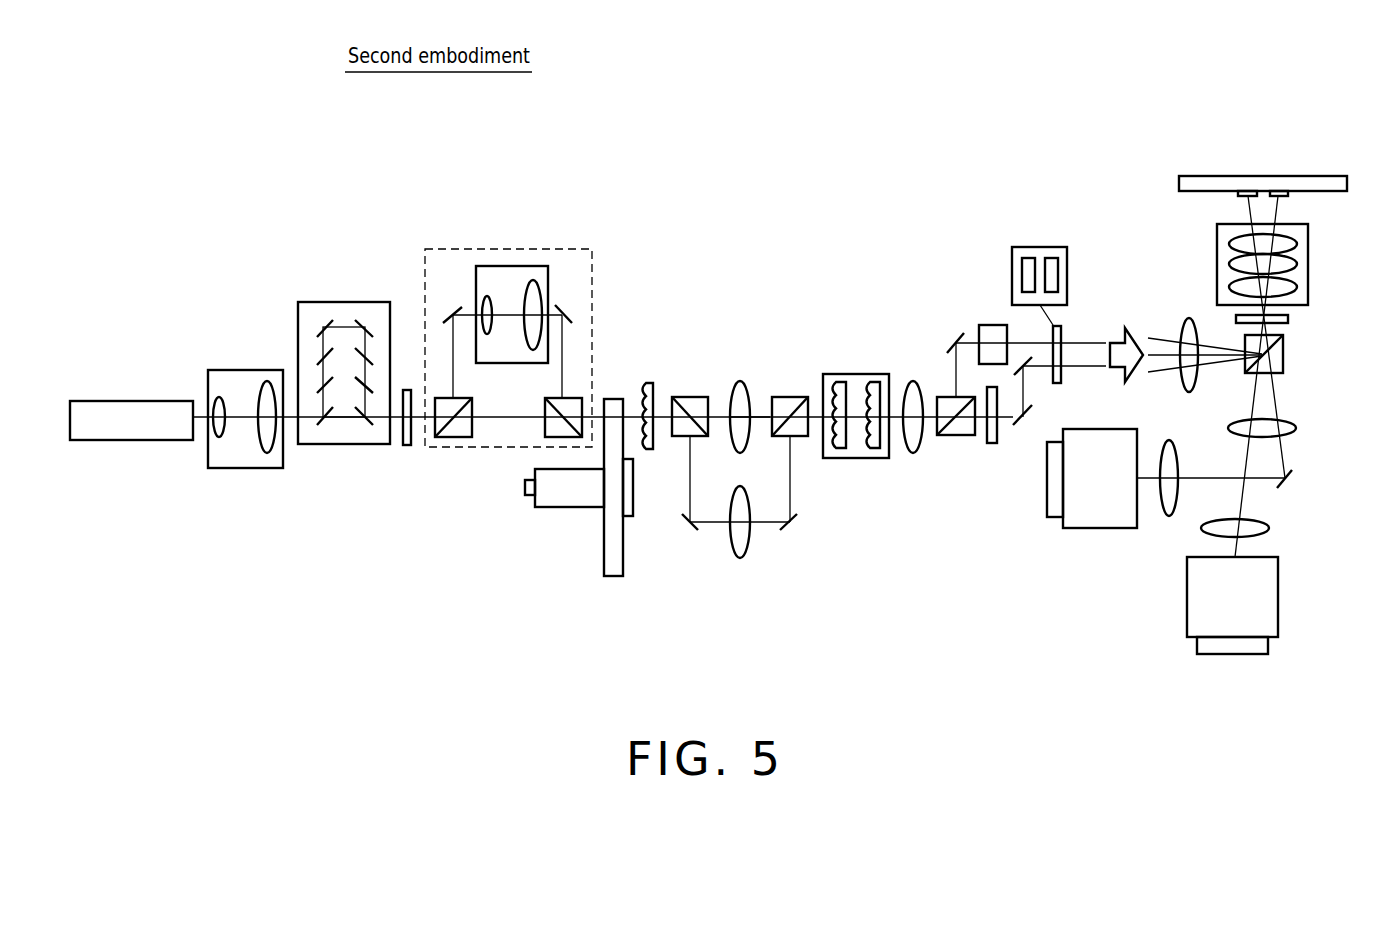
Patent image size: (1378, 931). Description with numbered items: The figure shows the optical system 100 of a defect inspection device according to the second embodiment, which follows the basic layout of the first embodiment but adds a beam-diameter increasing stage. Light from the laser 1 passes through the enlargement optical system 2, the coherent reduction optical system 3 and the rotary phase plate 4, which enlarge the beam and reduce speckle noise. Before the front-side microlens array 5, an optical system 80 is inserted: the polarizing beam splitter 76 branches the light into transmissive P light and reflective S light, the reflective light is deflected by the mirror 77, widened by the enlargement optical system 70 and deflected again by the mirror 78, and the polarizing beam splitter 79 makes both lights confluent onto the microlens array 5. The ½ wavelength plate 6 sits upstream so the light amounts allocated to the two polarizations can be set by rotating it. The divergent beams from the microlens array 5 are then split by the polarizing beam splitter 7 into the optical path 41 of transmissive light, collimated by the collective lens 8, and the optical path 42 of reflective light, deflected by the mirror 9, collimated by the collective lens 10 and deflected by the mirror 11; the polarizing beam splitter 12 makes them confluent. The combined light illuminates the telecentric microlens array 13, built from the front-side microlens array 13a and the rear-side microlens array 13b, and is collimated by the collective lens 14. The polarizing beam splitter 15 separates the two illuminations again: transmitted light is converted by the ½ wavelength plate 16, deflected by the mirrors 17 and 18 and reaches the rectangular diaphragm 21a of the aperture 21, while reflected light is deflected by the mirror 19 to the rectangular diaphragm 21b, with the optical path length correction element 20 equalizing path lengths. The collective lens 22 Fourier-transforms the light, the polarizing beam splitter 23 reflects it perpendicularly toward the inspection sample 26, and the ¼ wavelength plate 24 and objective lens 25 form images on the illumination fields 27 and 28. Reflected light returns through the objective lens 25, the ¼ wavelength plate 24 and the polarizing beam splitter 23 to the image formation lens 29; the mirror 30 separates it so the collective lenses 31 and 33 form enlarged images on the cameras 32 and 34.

The optical system 100 is at (839, 240).
The laser 1 is at (165, 400).
The enlargement optical system 2 is at (246, 369).
The coherent reduction optical system 3 is at (333, 301).
The rotary phase plate 4 is at (560, 508).
The microlens array 5 is at (648, 382).
The ½ wavelength plate 6 is at (407, 389).
The polarizing beam splitter 7 is at (690, 396).
The collective lens 8 is at (740, 380).
The mirror 9 is at (690, 532).
The collective lens 10 is at (740, 560).
The mirror 11 is at (790, 532).
The polarizing beam splitter 12 is at (795, 396).
The microlens array 13 is at (855, 373).
The front-side microlens array 13a is at (838, 450).
The rear-side microlens array 13b is at (875, 450).
The collective lens 14 is at (913, 380).
The polarizing beam splitter 15 is at (955, 437).
The ½ wavelength plate 16 is at (991, 445).
The mirror 17 is at (1023, 428).
The mirror 18 is at (1015, 368).
The mirror 19 is at (947, 335).
The optical path length correction element 20 is at (985, 324).
The aperture 21 is at (1040, 246).
The rectangular diaphragm 21a is at (1028, 257).
The rectangular diaphragm 21b is at (1052, 257).
The collective lens 22 is at (1180, 325).
The polarizing beam splitter 23 is at (1285, 357).
The ¼ wavelength plate 24 is at (1290, 320).
The objective lens 25 is at (1217, 267).
The inspection sample 26 is at (1290, 176).
The illumination field 27 is at (1240, 197).
The illumination field 28 is at (1288, 197).
The image formation lens 29 is at (1296, 428).
The mirror 30 is at (1292, 483).
The collective lens 31 is at (1168, 518).
The camera 32 is at (1098, 529).
The collective lens 33 is at (1270, 528).
The camera 34 is at (1280, 595).
The optical path 41 is at (759, 415).
The optical path 42 is at (690, 485).
The enlargement optical system 70 is at (513, 265).
The polarizing beam splitter 76 is at (455, 438).
The mirror 77 is at (455, 305).
The mirror 78 is at (560, 305).
The polarizing beam splitter 79 is at (545, 440).
The optical system 80 is at (562, 248).